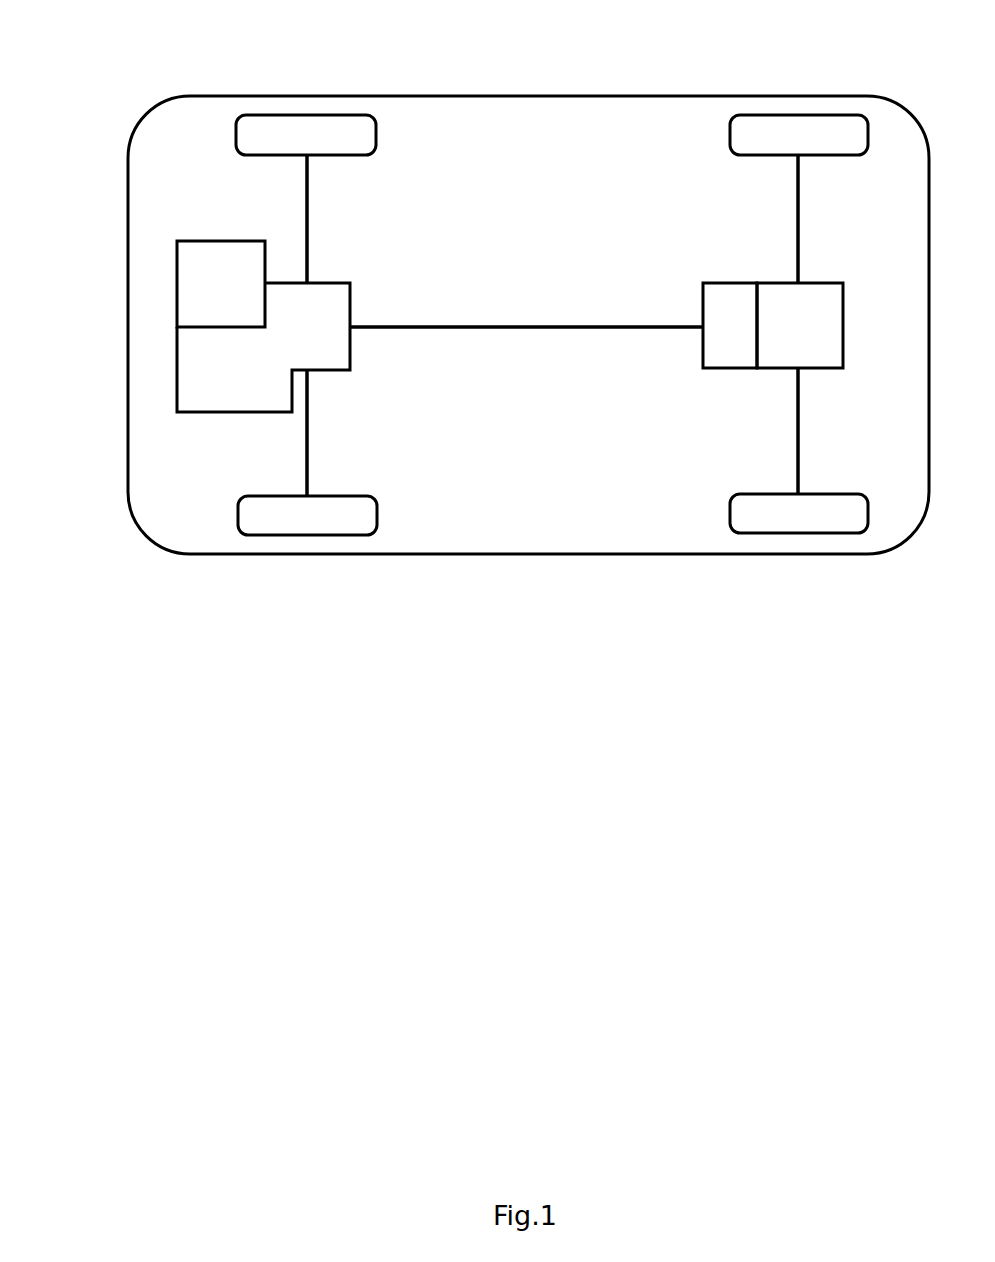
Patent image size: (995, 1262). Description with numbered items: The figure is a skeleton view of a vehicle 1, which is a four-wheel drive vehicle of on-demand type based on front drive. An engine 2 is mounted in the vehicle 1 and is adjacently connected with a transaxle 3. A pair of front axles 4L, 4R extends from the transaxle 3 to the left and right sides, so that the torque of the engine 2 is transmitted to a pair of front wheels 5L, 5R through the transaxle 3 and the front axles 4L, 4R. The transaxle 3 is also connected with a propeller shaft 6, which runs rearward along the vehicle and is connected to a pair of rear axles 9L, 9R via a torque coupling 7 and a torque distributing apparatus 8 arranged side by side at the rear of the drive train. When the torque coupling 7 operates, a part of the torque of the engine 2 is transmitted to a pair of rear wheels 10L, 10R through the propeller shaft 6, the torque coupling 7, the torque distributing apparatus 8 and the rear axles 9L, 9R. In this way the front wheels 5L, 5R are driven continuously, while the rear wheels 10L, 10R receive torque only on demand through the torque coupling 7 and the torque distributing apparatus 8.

The vehicle 1 is at (122, 72).
The engine 2 is at (233, 304).
The transaxle 3 is at (233, 391).
The front axle 4R is at (308, 215).
The front axle 4L is at (308, 432).
The front wheel 5R is at (376, 136).
The front wheel 5L is at (377, 516).
The propeller shaft 6 is at (496, 325).
The torque coupling 7 is at (741, 343).
The torque distributing apparatus 8 is at (811, 343).
The rear axle 9R is at (797, 220).
The rear axle 9L is at (797, 432).
The rear wheel 10R is at (729, 136).
The rear wheel 10L is at (729, 517).